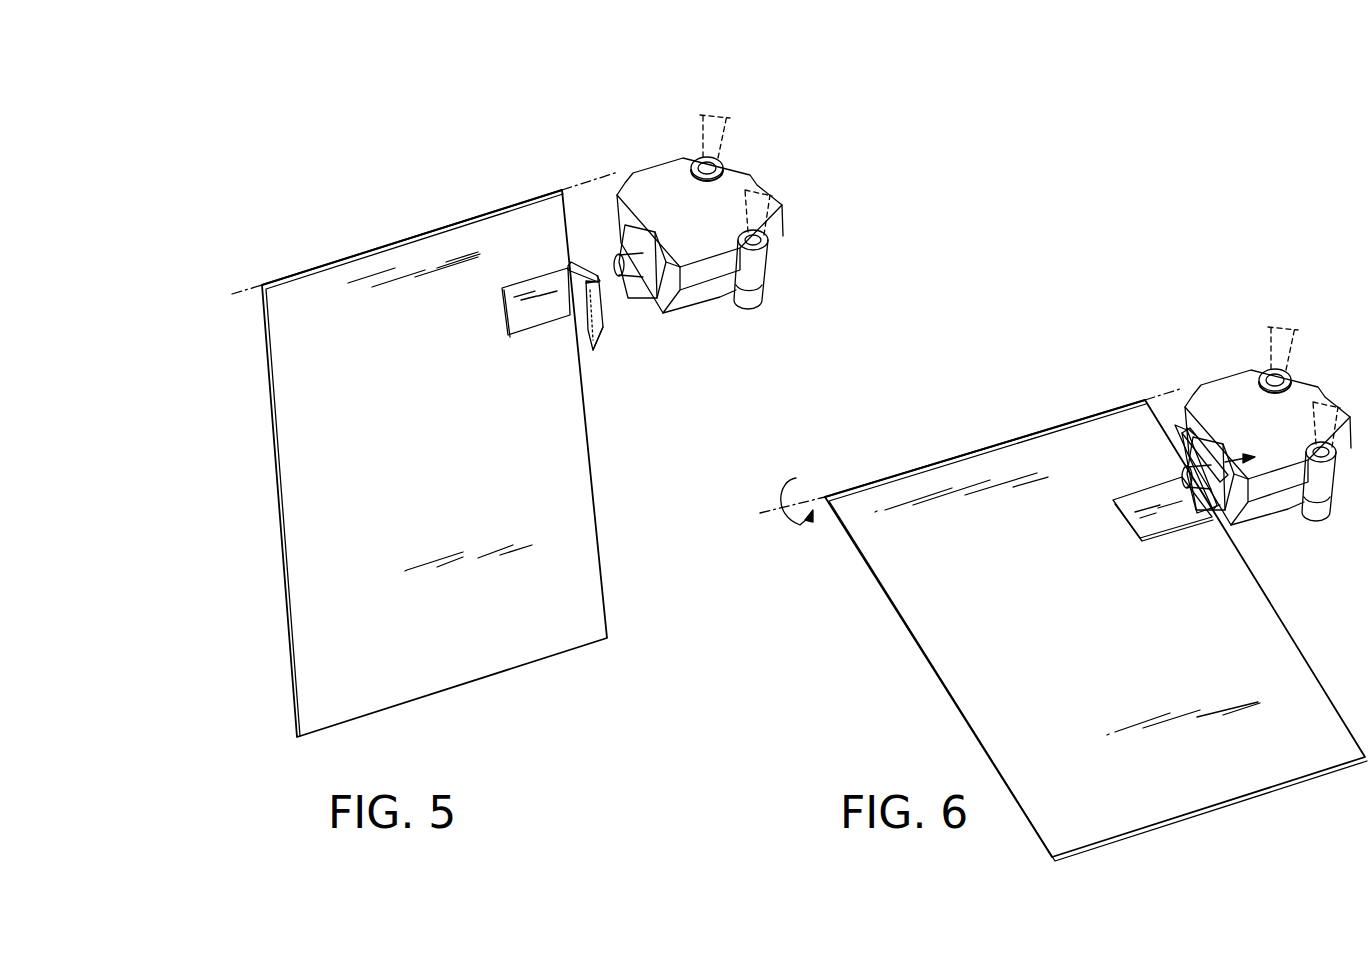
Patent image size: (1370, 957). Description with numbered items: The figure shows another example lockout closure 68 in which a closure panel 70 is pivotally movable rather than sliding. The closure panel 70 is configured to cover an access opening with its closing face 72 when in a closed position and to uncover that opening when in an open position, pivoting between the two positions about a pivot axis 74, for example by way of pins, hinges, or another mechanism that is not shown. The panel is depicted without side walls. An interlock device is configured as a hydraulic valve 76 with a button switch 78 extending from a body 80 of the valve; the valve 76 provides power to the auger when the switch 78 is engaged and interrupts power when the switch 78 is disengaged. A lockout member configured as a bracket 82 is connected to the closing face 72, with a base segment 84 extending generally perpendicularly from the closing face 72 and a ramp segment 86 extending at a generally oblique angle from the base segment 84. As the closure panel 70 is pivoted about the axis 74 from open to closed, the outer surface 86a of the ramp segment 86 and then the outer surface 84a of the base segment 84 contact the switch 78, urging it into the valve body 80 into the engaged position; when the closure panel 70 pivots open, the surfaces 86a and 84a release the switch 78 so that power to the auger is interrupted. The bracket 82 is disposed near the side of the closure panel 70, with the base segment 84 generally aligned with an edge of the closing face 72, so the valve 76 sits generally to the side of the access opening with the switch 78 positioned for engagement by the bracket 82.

In FIG. 5, the lockout closure 68 is at (577, 144).
In FIG. 6, the lockout closure 68 is at (1154, 355).
In FIG. 5, the closure panel 70 is at (276, 252).
In FIG. 6, the closure panel 70 is at (1001, 413).
In FIG. 5, the closing face 72 is at (448, 470).
In FIG. 6, the closing face 72 is at (1077, 628).
In FIG. 5, the pivot axis 74 is at (345, 262).
In FIG. 6, the pivot axis 74 is at (897, 472).
In FIG. 5, the hydraulic valve 76 is at (683, 134).
In FIG. 6, the hydraulic valve 76 is at (1255, 344).
In FIG. 5, the button switch 78 is at (634, 280).
In FIG. 6, the button switch 78 is at (1204, 495).
In FIG. 5, the valve body 80 is at (742, 190).
In FIG. 6, the valve body 80 is at (1313, 398).
In FIG. 5, the bracket 82 is at (540, 310).
In FIG. 6, the bracket 82 is at (1162, 517).
In FIG. 5, the base segment 84 is at (580, 272).
In FIG. 6, the base segment 84 is at (1205, 520).
In FIG. 5, the outer surface of base segment 84a is at (593, 257).
In FIG. 6, the outer surface of base segment 84a is at (1190, 440).
In FIG. 5, the ramp segment 86 is at (589, 332).
In FIG. 6, the ramp segment 86 is at (1193, 455).
In FIG. 5, the outer surface of ramp segment 86a is at (597, 324).